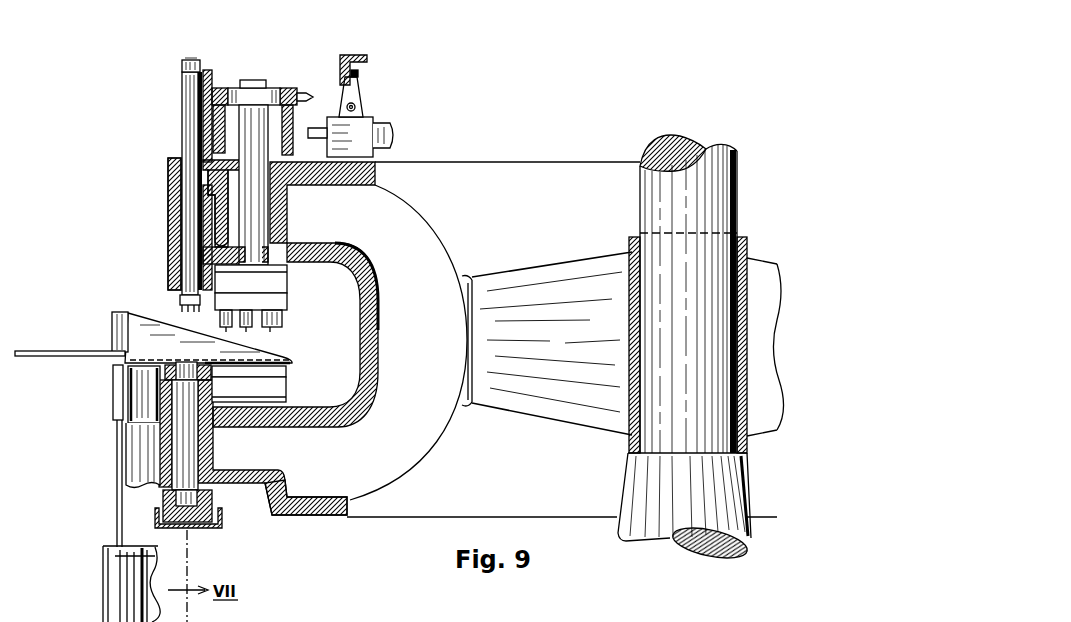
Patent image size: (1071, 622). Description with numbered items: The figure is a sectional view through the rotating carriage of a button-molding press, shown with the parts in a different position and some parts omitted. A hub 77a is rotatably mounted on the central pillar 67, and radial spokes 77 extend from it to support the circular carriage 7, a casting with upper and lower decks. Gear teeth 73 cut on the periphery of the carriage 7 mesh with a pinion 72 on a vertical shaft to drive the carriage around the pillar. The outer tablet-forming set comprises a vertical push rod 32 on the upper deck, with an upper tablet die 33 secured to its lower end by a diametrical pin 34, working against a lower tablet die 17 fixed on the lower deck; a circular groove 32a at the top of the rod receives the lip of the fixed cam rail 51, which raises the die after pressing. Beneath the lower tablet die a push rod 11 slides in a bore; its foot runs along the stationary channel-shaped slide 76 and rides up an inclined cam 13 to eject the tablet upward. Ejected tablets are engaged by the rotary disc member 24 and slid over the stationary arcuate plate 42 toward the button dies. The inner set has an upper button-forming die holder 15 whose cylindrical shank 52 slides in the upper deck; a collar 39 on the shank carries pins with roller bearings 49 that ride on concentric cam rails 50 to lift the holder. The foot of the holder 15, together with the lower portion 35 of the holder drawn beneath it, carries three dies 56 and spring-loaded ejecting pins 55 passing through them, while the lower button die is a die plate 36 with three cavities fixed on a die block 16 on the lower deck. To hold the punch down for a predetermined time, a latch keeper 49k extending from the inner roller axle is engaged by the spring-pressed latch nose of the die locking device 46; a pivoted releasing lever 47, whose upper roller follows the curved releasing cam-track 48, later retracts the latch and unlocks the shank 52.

The carriage 7 is at (305, 515).
The push rod 11 is at (183, 437).
The inclined cam 13 is at (205, 503).
The upper button-forming die holder 15 is at (268, 288).
The die block 16 is at (260, 393).
The lower tablet die 17 is at (178, 335).
The rotary disc member 24 is at (45, 360).
The push rod 32 is at (190, 117).
The circular groove 32a is at (185, 70).
The upper tablet die 33 is at (178, 291).
The diametrical pin 34 is at (172, 270).
The plate 35 is at (268, 305).
The die plate 36 is at (270, 376).
The collar 39 is at (247, 102).
The arcuate plate 42 is at (248, 350).
The die locking device 46 is at (387, 133).
The releasing lever 47 is at (358, 72).
The releasing cam-track 48 is at (367, 60).
The anti-friction roller bearing 49 is at (287, 93).
The latch keeper 49k is at (305, 95).
The cam rail 50 is at (295, 120).
The cam rail 51 is at (208, 70).
The shank 52 is at (258, 215).
The ejecting pin 55 is at (272, 335).
The die 56 is at (281, 322).
The central pillar 67 is at (690, 212).
The pinion 72 is at (128, 463).
The gear teeth 73 is at (132, 447).
The channel-shaped slide 76 is at (200, 525).
The radial spoke 77 is at (600, 283).
The hub 77a is at (632, 238).